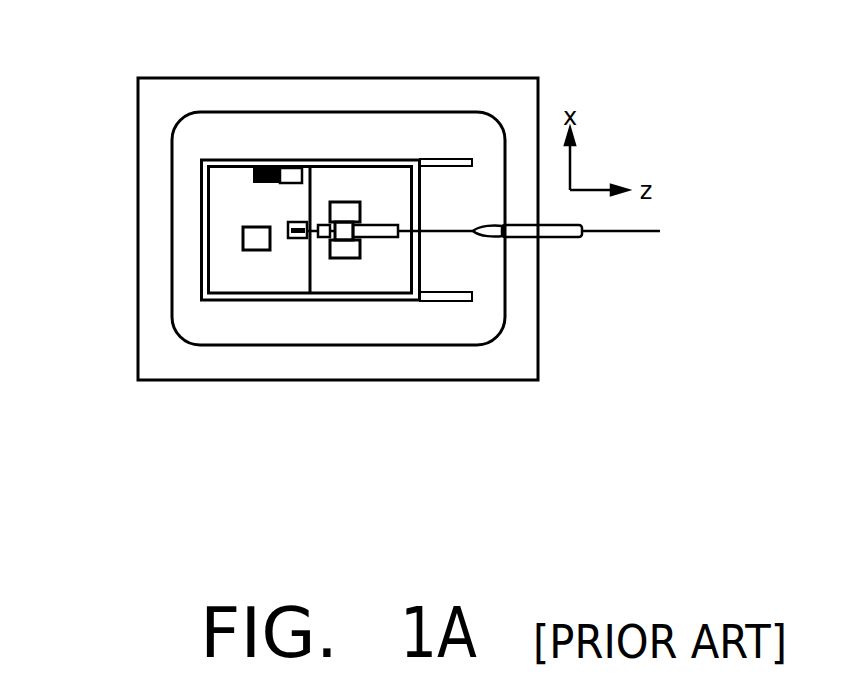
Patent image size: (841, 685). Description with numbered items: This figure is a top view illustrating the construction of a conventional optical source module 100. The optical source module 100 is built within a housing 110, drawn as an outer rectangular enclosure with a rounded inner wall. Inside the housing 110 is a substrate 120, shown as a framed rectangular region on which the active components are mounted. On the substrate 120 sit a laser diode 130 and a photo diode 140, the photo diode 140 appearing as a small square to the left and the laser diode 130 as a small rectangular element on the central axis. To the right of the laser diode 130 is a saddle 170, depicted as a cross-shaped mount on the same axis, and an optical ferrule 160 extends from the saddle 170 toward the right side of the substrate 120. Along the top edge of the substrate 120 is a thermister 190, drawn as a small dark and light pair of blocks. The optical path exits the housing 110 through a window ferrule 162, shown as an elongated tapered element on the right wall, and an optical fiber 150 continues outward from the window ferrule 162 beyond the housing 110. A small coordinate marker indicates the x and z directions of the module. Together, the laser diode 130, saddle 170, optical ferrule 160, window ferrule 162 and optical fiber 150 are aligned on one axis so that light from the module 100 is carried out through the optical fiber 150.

The optical source module 100 is at (377, 520).
The housing 110 is at (478, 380).
The substrate 120 is at (233, 278).
The laser diode 130 is at (295, 238).
The photo diode 140 is at (243, 233).
The optical fiber 150 is at (625, 233).
The optical ferrule 160 is at (380, 226).
The window ferrule 162 is at (558, 237).
The saddle 170 is at (348, 248).
The thermister 190 is at (293, 175).